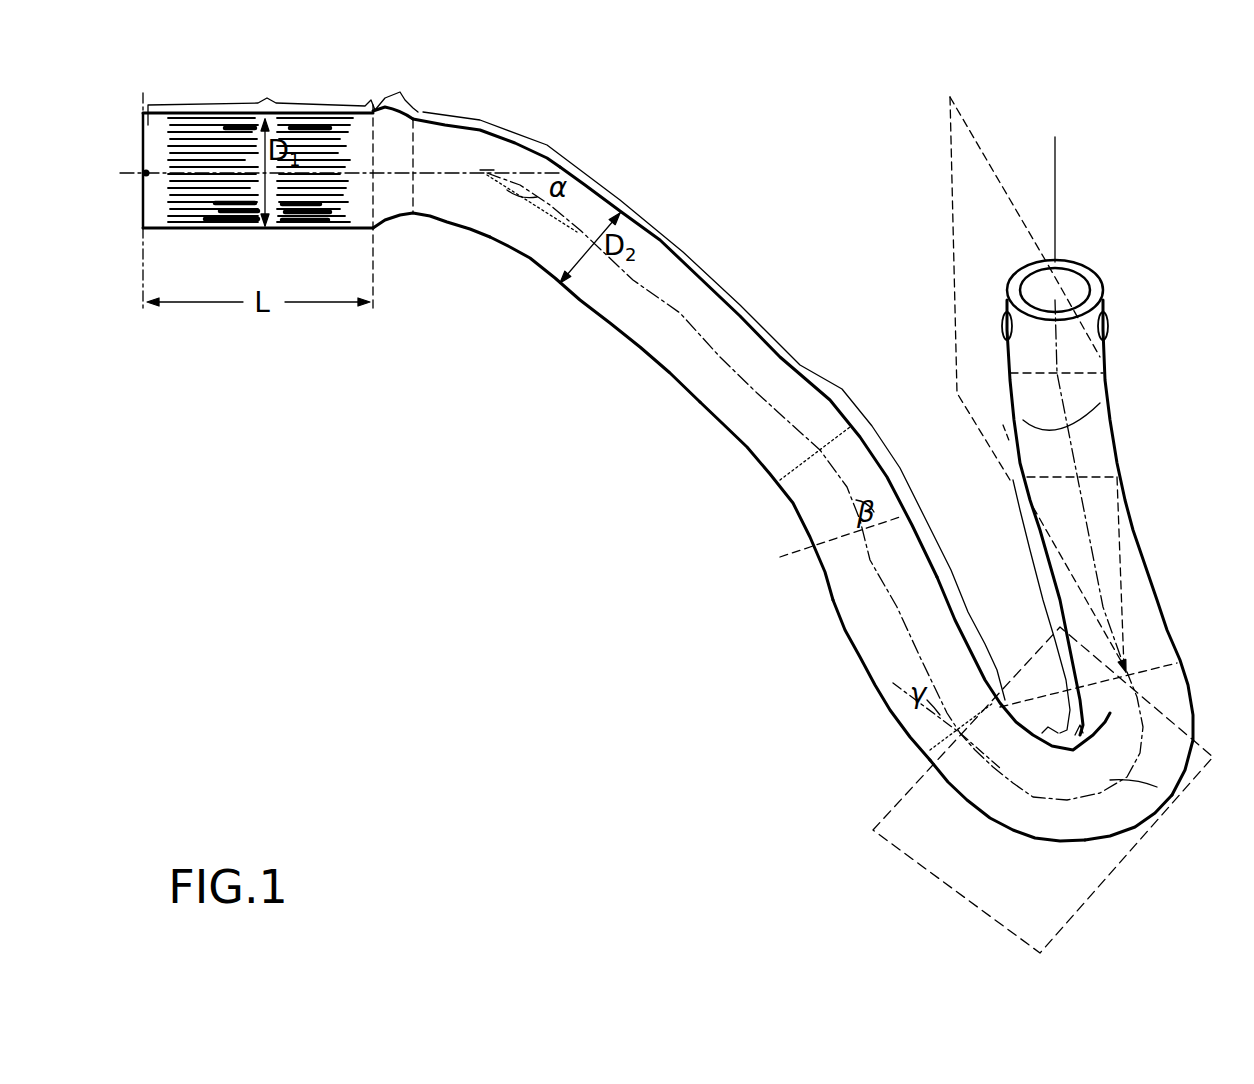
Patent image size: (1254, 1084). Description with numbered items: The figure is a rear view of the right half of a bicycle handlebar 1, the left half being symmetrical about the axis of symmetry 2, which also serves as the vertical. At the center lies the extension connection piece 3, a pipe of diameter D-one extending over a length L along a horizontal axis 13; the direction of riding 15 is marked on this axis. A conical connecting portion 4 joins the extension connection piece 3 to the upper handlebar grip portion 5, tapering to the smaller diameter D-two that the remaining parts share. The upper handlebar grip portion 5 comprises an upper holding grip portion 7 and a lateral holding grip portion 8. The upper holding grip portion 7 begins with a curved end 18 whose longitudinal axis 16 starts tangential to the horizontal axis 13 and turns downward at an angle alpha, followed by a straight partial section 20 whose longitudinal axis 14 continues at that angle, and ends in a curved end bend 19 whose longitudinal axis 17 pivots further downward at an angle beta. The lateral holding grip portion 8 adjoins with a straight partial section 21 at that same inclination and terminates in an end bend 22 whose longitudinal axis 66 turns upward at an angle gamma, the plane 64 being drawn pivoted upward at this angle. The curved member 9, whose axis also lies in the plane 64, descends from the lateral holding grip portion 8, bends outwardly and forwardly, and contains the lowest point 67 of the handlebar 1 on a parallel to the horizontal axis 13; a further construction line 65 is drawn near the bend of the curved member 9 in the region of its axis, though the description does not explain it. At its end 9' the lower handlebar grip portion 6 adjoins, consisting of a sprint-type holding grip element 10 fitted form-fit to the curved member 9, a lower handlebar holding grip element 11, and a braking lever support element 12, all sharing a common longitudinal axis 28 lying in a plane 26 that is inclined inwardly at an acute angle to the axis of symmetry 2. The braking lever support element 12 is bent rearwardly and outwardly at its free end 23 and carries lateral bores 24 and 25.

The bicycle handlebar 1 is at (527, 437).
The axis of symmetry 2 is at (143, 240).
The extension connection piece 3 is at (259, 197).
The connecting portion 4 is at (395, 144).
The upper handlebar grip portion 5 is at (718, 460).
The lower handlebar grip portion 6 is at (1160, 497).
The upper holding grip portion 7 is at (697, 262).
The lateral holding grip portion 8 is at (972, 638).
The curved member 9 is at (1062, 728).
The end of the curved member 9' is at (1115, 667).
The sprint-type holding grip element 10 is at (1041, 590).
The lower handlebar holding grip element 11 is at (1010, 440).
The braking lever support element 12 is at (998, 310).
The horizontal axis 13 is at (553, 173).
The longitudinal axis of the straight partial section 14 is at (665, 375).
The direction of riding 15 is at (146, 173).
The longitudinal axis of the curved end 16 is at (487, 178).
The longitudinal axis of the curved end bend 17 is at (790, 557).
The curved end 18 is at (447, 222).
The curved end bend 19 is at (793, 503).
The straight partial section 20 is at (613, 333).
The straight partial section 21 is at (842, 627).
The end bend 22 is at (960, 800).
The free end 23 is at (1070, 290).
The bore 24 is at (1107, 318).
The bore 25 is at (1003, 320).
The plane 26 is at (950, 167).
The common longitudinal axis 28 is at (1058, 165).
The plane 64 is at (905, 862).
The radius arc 65 is at (1157, 787).
The longitudinal axis of the end bend 66 is at (980, 773).
The lowest point 67 is at (1070, 843).